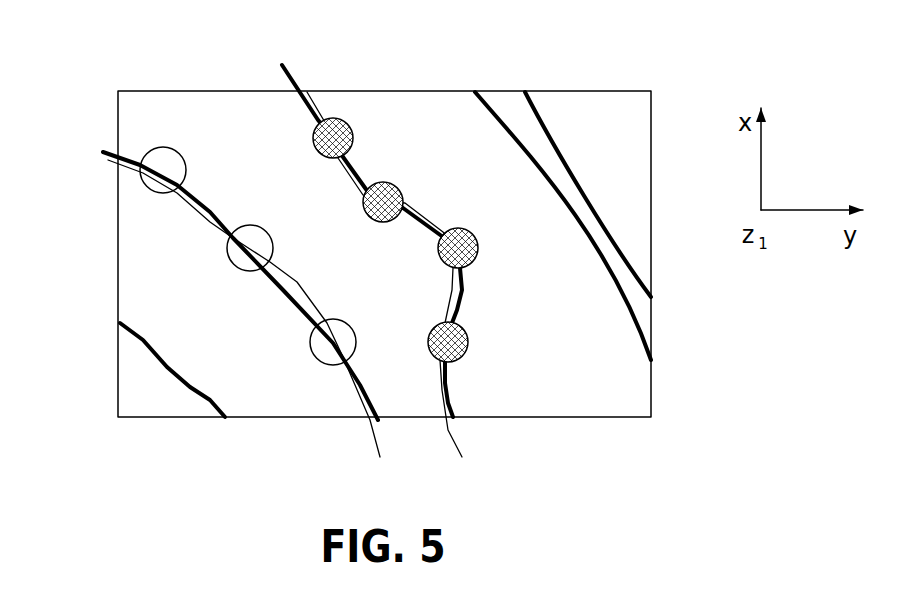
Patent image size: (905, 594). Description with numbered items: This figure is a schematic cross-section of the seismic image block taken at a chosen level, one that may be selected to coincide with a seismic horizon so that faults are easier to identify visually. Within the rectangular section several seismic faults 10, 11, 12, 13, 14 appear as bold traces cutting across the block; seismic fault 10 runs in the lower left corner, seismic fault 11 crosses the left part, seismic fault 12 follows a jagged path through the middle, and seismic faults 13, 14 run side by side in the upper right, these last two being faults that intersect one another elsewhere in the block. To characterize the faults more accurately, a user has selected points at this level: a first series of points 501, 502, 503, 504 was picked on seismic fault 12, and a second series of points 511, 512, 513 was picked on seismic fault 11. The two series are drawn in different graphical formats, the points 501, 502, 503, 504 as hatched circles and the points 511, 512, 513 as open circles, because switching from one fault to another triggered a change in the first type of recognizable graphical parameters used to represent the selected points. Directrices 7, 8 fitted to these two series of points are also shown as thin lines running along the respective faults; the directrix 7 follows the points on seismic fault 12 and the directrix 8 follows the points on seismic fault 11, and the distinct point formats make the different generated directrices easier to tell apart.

The directrix 7 is at (452, 442).
The directrix 8 is at (375, 441).
The seismic fault 10 is at (133, 340).
The seismic fault 11 is at (197, 200).
The seismic fault 12 is at (322, 108).
The seismic fault 13 is at (490, 108).
The seismic fault 14 is at (540, 117).
The point 501 is at (353, 132).
The point 502 is at (398, 186).
The point 503 is at (475, 260).
The point 504 is at (462, 356).
The point 511 is at (147, 190).
The point 512 is at (227, 260).
The point 513 is at (313, 360).